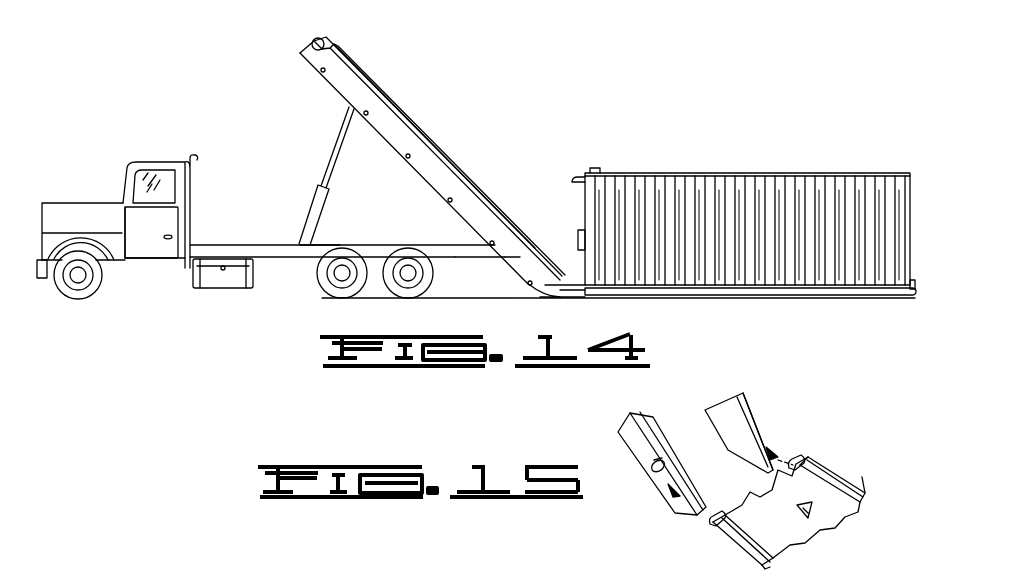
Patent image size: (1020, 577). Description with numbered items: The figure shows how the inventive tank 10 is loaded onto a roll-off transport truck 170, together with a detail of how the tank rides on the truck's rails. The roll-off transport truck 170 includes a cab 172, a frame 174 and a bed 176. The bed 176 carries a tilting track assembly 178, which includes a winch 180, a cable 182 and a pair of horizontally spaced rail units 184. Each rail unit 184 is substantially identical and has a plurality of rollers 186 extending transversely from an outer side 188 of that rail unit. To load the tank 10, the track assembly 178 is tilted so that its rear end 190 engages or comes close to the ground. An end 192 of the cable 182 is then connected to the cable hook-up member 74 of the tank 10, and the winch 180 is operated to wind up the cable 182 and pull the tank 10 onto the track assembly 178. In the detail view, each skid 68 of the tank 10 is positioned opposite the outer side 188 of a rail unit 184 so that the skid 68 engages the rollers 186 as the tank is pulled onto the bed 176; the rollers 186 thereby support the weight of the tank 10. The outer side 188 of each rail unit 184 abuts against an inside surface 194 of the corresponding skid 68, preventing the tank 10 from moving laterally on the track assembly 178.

In FIG. 14, the tank 10 is at (765, 152).
In FIG. 15, the skid 68 is at (723, 513).
In FIG. 14, the cable hook-up member 74 is at (578, 290).
In FIG. 14, the roll-off transport truck 170 is at (130, 135).
In FIG. 14, the cab 172 is at (158, 240).
In FIG. 14, the frame 174 is at (292, 250).
In FIG. 14, the bed 176 is at (231, 245).
In FIG. 14, the tilting track assembly 178 is at (302, 56).
In FIG. 15, the tilting track assembly 178 is at (638, 427).
In FIG. 14, the winch 180 is at (318, 42).
In FIG. 14, the cable 182 is at (340, 67).
In FIG. 14, the rail unit 184 is at (402, 153).
In FIG. 15, the rail unit 184 is at (655, 384).
In FIG. 14, the rollers 186 is at (440, 185).
In FIG. 15, the rollers 186 is at (640, 447).
In FIG. 14, the outer side 188 is at (470, 222).
In FIG. 15, the outer side 188 is at (663, 482).
In FIG. 14, the rear end 190 is at (547, 298).
In FIG. 14, the end 192 is at (578, 286).
In FIG. 15, the inside surface 194 is at (722, 513).